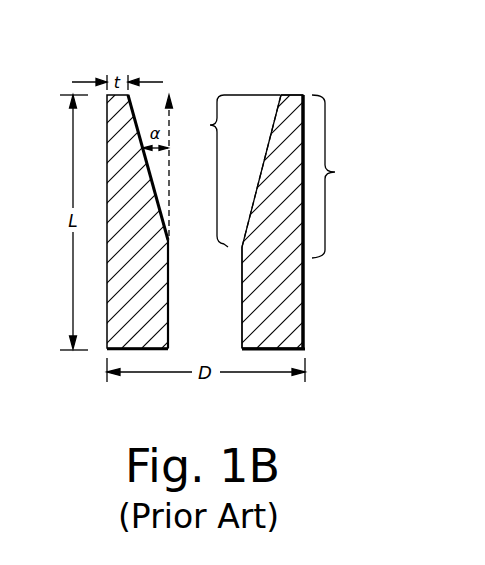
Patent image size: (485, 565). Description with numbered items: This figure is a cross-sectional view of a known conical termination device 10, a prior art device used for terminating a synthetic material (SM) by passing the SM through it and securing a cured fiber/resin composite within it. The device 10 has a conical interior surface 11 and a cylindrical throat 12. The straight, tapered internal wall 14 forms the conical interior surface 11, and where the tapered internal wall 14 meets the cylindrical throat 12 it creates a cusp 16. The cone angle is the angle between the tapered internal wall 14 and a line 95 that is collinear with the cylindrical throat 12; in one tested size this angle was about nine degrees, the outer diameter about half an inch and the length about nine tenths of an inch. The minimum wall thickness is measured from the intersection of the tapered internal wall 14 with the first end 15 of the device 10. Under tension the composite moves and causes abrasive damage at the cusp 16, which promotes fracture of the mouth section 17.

The conical termination device 10 is at (353, 63).
The conical interior surface 11 is at (210, 125).
The cylindrical throat 12 is at (241, 303).
The tapered internal wall 14 is at (250, 210).
The first end 15 is at (297, 94).
The cusp 16 is at (241, 248).
The mouth section 17 is at (338, 176).
The line collinear with the cylindrical throat 95 is at (170, 135).